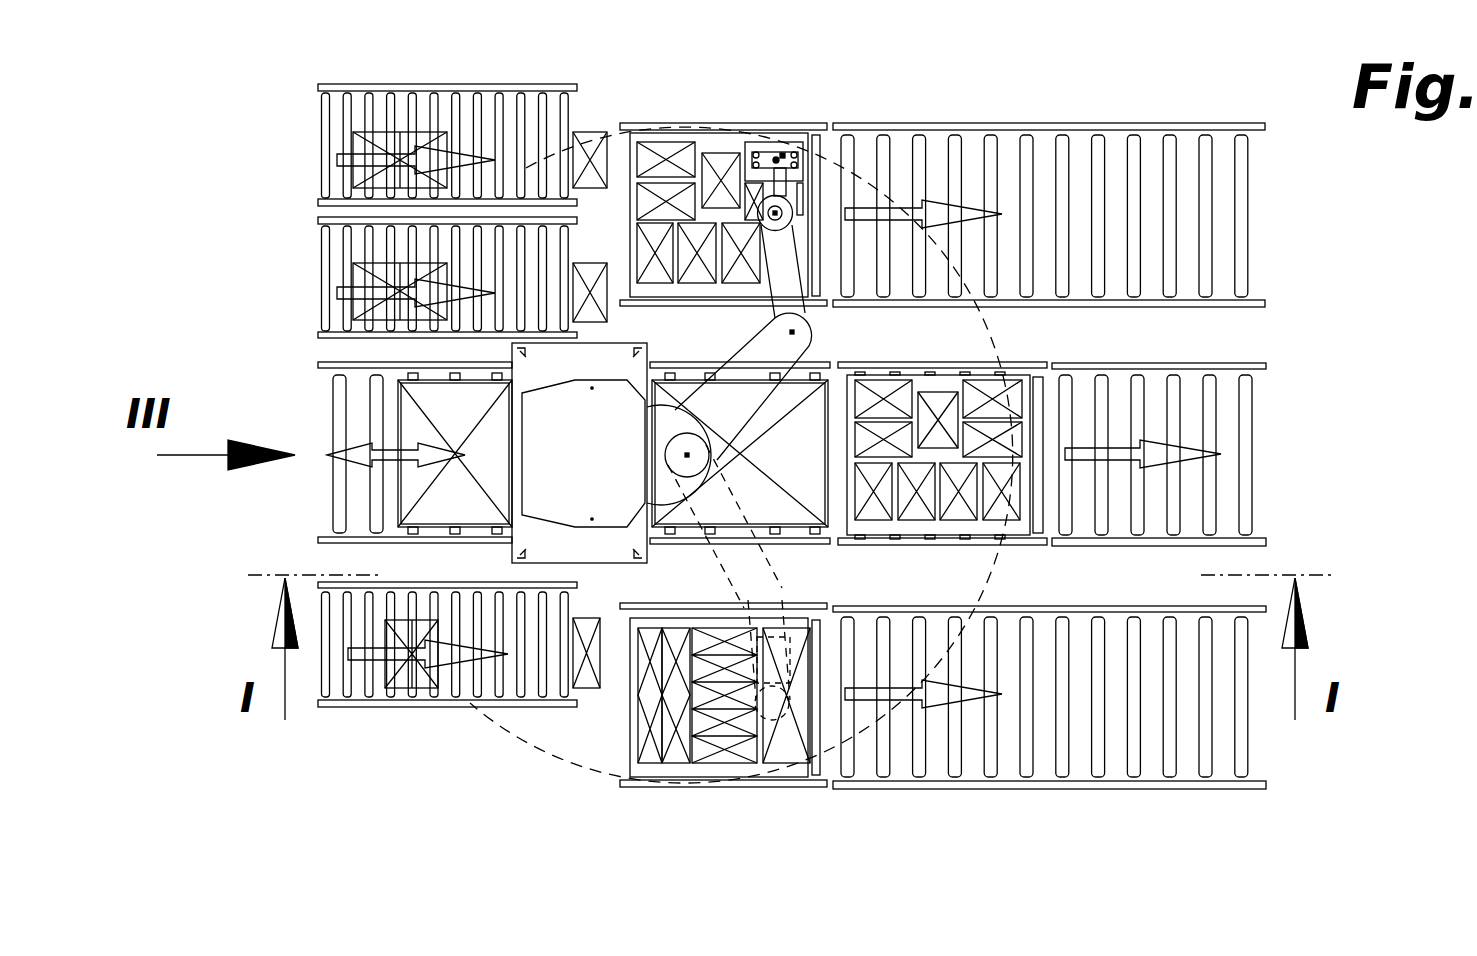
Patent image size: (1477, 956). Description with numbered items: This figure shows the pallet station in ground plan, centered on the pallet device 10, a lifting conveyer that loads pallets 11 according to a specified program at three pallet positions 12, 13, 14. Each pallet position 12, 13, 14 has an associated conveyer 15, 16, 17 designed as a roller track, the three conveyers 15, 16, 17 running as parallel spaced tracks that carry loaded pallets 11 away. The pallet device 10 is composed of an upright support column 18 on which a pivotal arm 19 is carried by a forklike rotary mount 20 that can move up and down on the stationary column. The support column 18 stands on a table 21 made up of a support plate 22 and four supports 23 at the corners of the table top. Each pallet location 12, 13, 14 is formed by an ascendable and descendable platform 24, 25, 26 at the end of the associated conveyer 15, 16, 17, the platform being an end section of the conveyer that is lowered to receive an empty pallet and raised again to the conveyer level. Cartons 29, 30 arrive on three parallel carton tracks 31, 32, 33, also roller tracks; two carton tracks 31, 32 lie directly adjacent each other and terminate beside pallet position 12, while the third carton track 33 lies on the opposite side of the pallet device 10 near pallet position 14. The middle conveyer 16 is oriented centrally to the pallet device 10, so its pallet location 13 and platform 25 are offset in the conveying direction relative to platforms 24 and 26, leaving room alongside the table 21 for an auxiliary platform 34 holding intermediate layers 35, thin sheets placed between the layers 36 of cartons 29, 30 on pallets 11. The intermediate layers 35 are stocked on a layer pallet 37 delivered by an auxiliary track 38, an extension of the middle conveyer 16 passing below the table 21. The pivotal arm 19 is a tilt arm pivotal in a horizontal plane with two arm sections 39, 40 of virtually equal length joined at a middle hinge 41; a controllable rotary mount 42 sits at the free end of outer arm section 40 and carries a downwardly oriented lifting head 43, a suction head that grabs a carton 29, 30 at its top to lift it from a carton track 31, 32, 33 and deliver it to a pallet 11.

The pallet device 10 is at (505, 482).
The pallet 11 is at (655, 137).
The pallet position 12 is at (730, 106).
The pallet position 13 is at (1060, 347).
The pallet position 14 is at (601, 806).
The conveyer 15 is at (1270, 220).
The conveyer 16 is at (1279, 498).
The conveyer 17 is at (1308, 748).
The support column 18 is at (667, 485).
The pivotal arm 19 is at (745, 340).
The rotary mount 20 is at (687, 455).
The table 21 is at (557, 568).
The support plate 22 is at (500, 350).
The supports 23 is at (523, 557).
The platform 24 is at (820, 121).
The platform 25 is at (1053, 350).
The platform 26 is at (793, 795).
The carton 29 is at (425, 138).
The carton 30 is at (899, 351).
The carton track 31 is at (300, 125).
The carton track 32 is at (303, 243).
The carton track 33 is at (398, 734).
The auxiliary platform 34 is at (830, 553).
The intermediate layers 35 is at (815, 473).
The layers 36 is at (765, 142).
The layer pallet 37 is at (398, 410).
The auxiliary track 38 is at (310, 488).
The arm section 39 is at (810, 338).
The arm section 40 is at (790, 267).
The hinge 41 is at (1023, 356).
The rotary mount 42 is at (792, 205).
The lifting head 43 is at (817, 116).